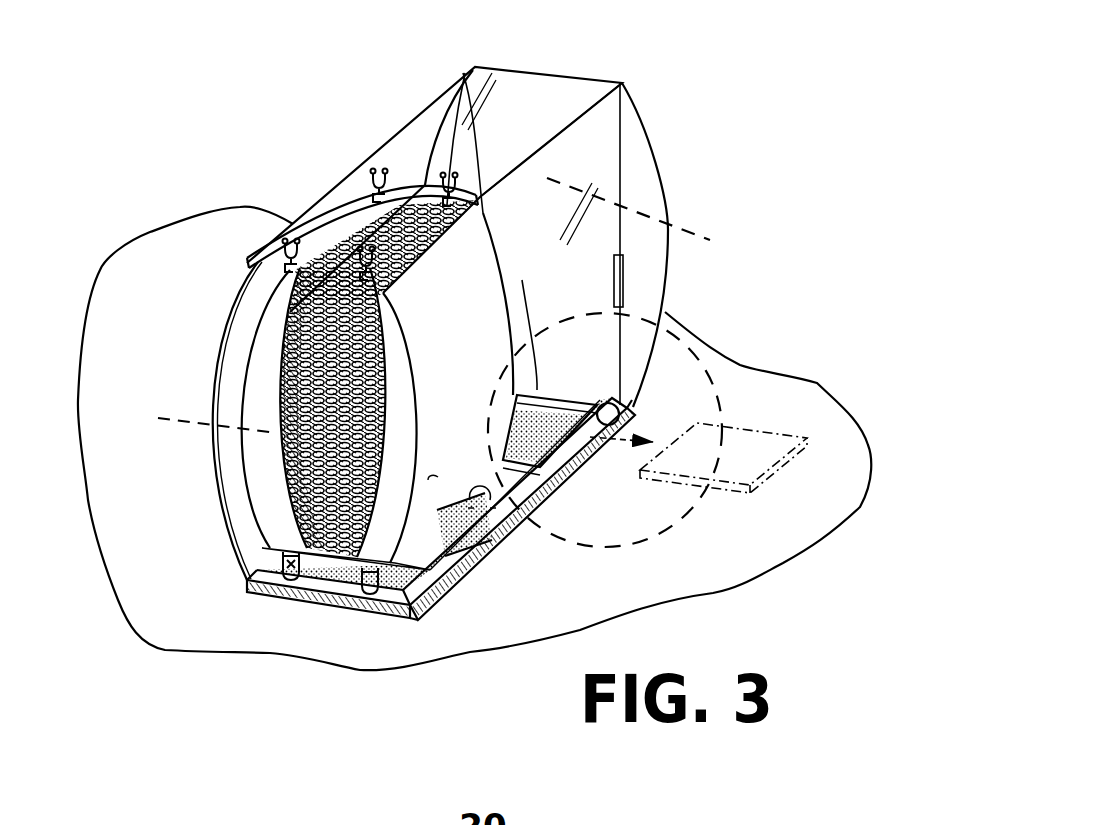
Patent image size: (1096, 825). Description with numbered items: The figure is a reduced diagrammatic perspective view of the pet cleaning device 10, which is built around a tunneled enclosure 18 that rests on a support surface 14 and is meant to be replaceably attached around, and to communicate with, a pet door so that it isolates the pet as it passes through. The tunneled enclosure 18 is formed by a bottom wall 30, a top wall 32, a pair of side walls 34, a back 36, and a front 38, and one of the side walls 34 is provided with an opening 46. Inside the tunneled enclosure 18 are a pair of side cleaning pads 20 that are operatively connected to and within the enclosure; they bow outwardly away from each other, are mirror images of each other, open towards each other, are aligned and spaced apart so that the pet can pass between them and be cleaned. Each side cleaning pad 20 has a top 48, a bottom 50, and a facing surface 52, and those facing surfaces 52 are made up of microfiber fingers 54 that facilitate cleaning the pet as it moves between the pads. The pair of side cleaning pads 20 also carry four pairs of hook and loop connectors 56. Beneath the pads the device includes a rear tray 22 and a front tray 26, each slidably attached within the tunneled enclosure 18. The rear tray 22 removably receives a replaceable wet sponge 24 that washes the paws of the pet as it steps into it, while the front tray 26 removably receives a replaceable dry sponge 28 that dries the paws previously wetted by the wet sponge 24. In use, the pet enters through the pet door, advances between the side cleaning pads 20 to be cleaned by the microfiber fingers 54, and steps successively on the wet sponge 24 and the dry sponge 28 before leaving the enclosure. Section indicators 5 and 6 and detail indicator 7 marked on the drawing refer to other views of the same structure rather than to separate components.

The pet cleaning device 10 is at (300, 92).
The tunneled enclosure 18 is at (410, 112).
The side cleaning pads 20 is at (305, 330).
The rear tray 22 is at (525, 475).
The replaceable wet sponge 24 is at (537, 410).
The front tray 26 is at (425, 608).
The replaceable dry sponge 28 is at (420, 573).
The bottom wall 30 is at (240, 597).
The top wall 32 is at (563, 140).
The side walls 34 is at (667, 173).
The back 36 is at (700, 238).
The front 38 is at (323, 558).
The opening 46 is at (612, 402).
The tops 48 is at (410, 228).
The bottoms 50 is at (297, 578).
The facing surfaces 52 is at (421, 428).
The microfiber fingers 54 is at (400, 428).
The hook and loop connectors 56 is at (405, 183).
The support surface 14 is at (708, 543).
The detail area 7 is at (703, 352).
The section line 5 is at (183, 425).
The section line 6,6A 6 is at (477, 167).